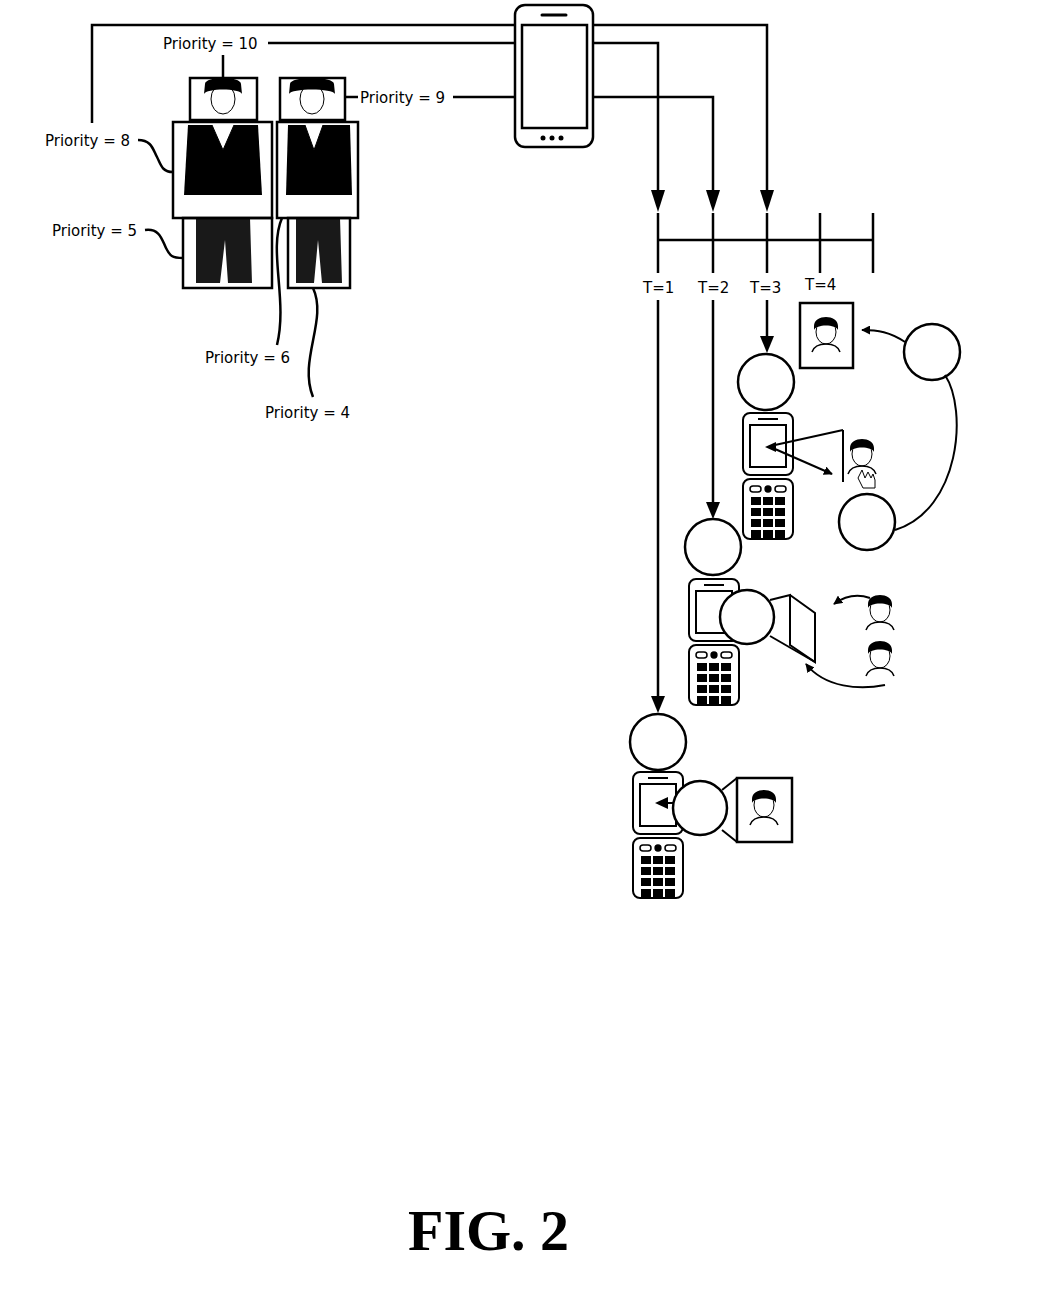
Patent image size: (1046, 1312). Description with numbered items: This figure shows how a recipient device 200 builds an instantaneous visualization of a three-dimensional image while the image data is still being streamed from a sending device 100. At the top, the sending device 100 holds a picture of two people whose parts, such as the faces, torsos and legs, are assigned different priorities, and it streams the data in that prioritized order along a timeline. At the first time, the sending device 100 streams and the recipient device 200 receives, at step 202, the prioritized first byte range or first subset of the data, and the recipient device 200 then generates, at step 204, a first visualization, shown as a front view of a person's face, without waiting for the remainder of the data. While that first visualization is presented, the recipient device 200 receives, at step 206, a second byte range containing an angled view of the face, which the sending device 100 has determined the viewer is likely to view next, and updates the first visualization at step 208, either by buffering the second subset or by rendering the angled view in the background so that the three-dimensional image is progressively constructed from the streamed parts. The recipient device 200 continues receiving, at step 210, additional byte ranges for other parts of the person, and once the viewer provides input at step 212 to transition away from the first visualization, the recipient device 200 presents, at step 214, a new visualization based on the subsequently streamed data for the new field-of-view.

The sending device 100 is at (555, 148).
The recipient device 200 is at (791, 410).
The streaming and receiving the prioritized first byte range 202 is at (658, 742).
The generating a first visualization 204 is at (700, 808).
The receiving a second byte range 206 is at (713, 547).
The updating the first visualization 208 is at (747, 617).
The receiving additional byte ranges 210 is at (766, 382).
The viewer input to transition 212 is at (867, 522).
The presenting a new visualization 214 is at (932, 352).